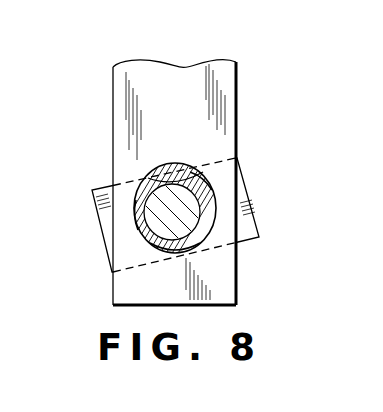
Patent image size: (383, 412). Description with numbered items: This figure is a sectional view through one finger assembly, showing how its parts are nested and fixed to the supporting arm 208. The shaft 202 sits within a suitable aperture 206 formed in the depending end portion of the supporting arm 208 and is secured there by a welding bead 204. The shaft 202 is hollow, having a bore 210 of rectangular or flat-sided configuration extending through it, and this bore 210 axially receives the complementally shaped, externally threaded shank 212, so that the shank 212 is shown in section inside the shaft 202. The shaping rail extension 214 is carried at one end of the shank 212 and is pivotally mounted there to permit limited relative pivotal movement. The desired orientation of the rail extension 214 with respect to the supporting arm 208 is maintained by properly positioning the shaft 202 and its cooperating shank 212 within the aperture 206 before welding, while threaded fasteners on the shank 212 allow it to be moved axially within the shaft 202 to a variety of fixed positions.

The shaft 202 is at (203, 247).
The welding bead 204 is at (172, 168).
The aperture 206 is at (147, 225).
The supporting arm 208 is at (118, 104).
The bore 210 is at (200, 185).
The shank 212 is at (195, 208).
The shaping rail extension 214 is at (93, 202).